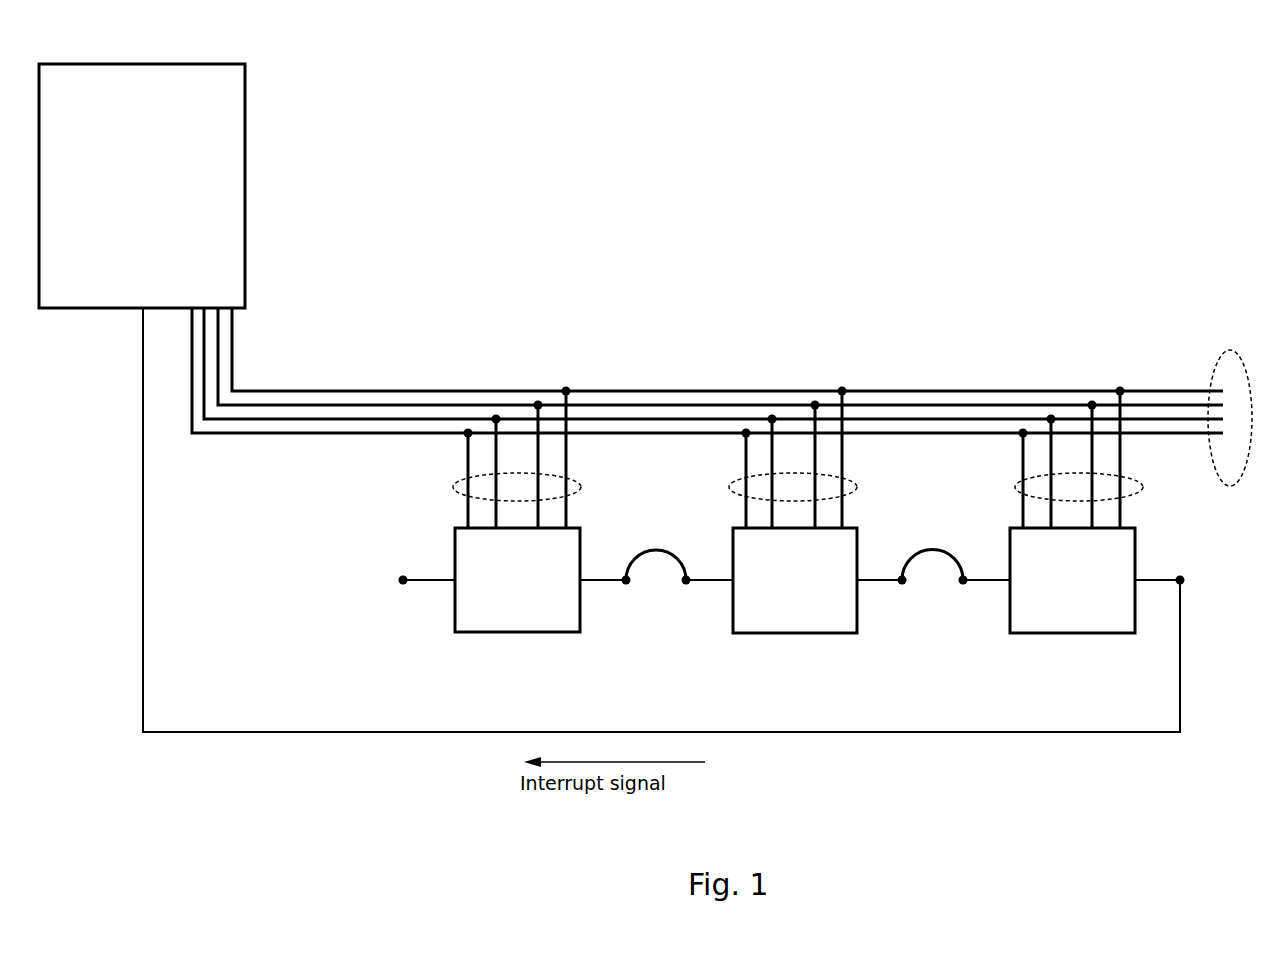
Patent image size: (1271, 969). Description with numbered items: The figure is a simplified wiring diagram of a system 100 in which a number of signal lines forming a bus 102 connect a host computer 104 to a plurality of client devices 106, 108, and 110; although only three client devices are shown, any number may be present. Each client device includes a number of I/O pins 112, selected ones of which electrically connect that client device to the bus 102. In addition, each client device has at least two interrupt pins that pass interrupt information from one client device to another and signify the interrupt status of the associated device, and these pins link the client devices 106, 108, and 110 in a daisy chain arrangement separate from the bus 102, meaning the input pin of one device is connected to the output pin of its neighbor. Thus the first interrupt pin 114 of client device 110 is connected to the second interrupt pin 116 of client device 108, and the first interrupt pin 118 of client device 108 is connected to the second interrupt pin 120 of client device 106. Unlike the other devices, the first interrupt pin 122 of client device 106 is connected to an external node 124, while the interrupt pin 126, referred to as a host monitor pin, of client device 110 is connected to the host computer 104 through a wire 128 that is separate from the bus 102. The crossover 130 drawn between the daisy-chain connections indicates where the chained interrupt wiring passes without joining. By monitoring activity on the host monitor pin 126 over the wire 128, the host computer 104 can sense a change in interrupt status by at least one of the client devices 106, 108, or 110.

The system 100 is at (197, 808).
The bus 102 is at (1230, 350).
The host computer 104 is at (142, 186).
The client device 106 is at (517, 510).
The client device 108 is at (795, 510).
The client device 110 is at (1072, 510).
The I/O pins 112 is at (581, 487).
The first interrupt pin 114 is at (985, 584).
The second interrupt pin 116 is at (905, 586).
The first interrupt pin 118 is at (708, 584).
The second interrupt pin 120 is at (629, 587).
The first interrupt pin 122 is at (418, 572).
The external node 124 is at (403, 586).
The host monitor pin 126 is at (1153, 577).
The wire 128 is at (1122, 735).
The interrupt line crossover 130 is at (657, 548).